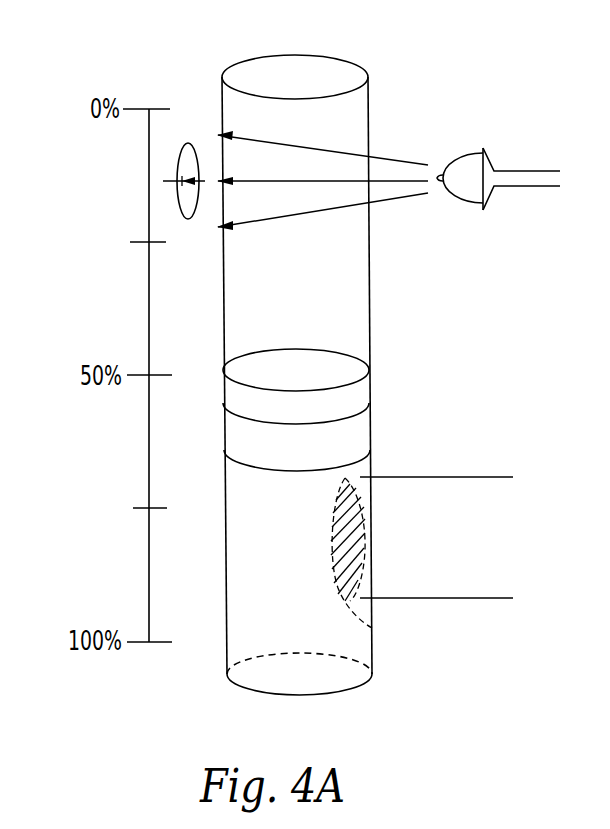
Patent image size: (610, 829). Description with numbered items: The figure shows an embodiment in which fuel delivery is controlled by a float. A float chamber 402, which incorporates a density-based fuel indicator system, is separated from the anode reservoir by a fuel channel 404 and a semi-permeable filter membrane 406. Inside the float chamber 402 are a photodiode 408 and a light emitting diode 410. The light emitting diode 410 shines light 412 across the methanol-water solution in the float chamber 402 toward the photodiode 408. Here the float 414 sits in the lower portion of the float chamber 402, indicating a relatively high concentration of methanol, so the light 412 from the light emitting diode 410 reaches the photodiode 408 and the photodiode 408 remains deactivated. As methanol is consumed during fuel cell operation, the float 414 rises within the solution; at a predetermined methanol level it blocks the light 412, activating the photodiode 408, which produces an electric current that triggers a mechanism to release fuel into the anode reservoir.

The float chamber 402 is at (357, 273).
The fuel channel 404 is at (425, 485).
The semi-permeable filter membrane 406 is at (372, 627).
The photodiode 408 is at (188, 143).
The light emitting diode 410 is at (462, 157).
The light 412 is at (337, 150).
The float 414 is at (360, 395).